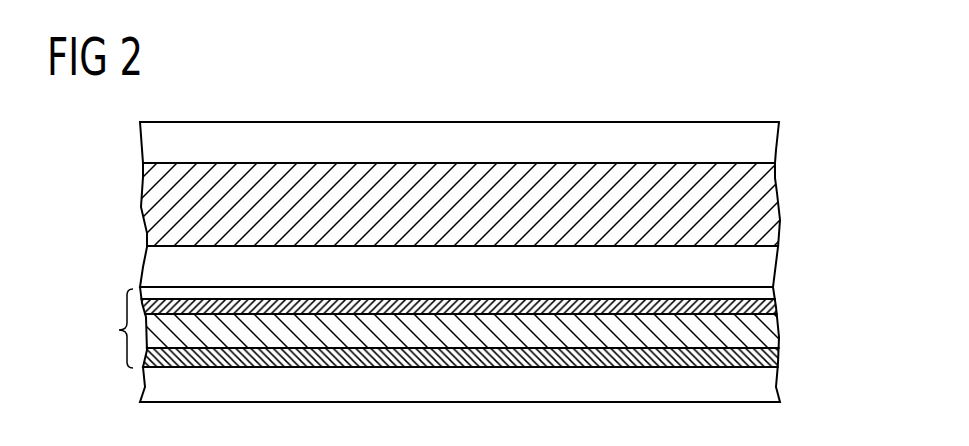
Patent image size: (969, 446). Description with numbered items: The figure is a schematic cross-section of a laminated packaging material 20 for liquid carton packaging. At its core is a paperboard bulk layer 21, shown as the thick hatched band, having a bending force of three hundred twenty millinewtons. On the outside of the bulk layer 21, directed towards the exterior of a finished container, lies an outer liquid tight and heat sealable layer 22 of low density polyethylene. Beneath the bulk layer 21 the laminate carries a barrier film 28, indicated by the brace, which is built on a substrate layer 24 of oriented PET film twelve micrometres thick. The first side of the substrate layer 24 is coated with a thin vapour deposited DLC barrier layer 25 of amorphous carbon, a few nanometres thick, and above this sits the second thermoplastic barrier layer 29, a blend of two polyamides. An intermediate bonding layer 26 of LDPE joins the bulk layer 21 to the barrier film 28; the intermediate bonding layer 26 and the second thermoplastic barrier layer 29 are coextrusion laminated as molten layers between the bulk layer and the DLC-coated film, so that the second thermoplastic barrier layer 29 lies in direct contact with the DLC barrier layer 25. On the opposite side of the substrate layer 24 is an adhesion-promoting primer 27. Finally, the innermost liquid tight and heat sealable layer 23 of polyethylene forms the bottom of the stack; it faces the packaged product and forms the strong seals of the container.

The laminated packaging material 20 is at (447, 270).
The outer liquid tight and heat sealable layer 22 is at (762, 140).
The paperboard bulk layer 21 is at (762, 197).
The intermediate bonding layer 26 is at (762, 258).
The second thermoplastic barrier layer 29 is at (762, 293).
The vapour deposited DLC barrier layer 25 is at (763, 308).
The substrate layer of polymer film 24 is at (762, 330).
The adhesion-promoting primer 27 is at (763, 358).
The innermost liquid tight and heat sealable layer 23 is at (763, 387).
The barrier film 28 is at (111, 328).